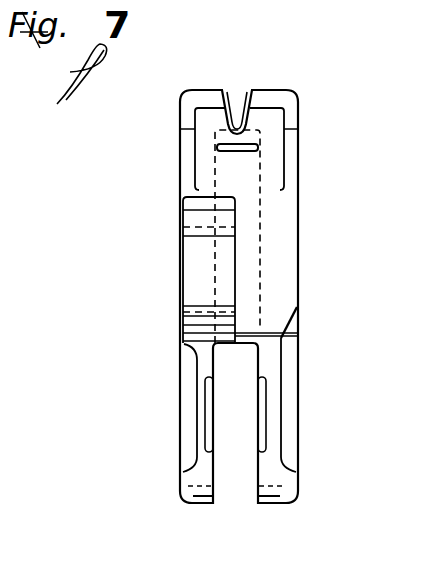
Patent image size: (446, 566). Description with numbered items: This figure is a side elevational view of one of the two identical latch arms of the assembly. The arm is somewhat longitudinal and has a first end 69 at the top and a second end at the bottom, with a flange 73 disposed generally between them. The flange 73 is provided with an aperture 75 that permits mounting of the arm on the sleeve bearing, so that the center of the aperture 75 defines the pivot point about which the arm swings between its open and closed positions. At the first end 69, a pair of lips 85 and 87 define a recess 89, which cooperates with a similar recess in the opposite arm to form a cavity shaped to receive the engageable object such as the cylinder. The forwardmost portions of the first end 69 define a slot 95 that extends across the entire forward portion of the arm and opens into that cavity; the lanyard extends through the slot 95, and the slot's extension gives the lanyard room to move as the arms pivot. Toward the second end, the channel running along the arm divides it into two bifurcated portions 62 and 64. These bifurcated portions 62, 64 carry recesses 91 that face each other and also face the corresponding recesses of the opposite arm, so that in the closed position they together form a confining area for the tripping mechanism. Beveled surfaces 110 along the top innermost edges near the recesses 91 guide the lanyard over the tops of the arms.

The bifurcated portion 62 is at (196, 496).
The bifurcated portion 64 is at (279, 484).
The first end 69 is at (180, 101).
The flange 73 is at (186, 212).
The aperture 75 is at (197, 312).
The lip 85 is at (291, 152).
The lip 87 is at (188, 134).
The recess 89 is at (209, 153).
The recesses 91 is at (260, 415).
The slot 95 is at (240, 98).
The beveled surfaces 110 is at (188, 416).